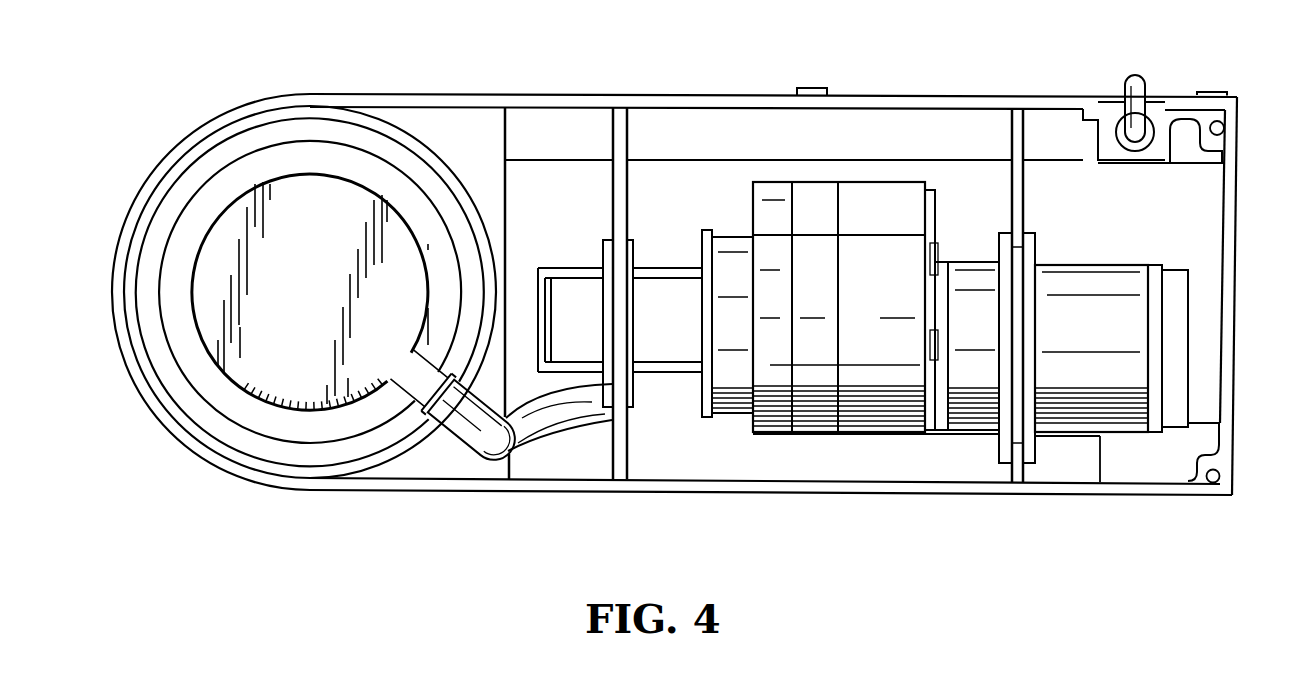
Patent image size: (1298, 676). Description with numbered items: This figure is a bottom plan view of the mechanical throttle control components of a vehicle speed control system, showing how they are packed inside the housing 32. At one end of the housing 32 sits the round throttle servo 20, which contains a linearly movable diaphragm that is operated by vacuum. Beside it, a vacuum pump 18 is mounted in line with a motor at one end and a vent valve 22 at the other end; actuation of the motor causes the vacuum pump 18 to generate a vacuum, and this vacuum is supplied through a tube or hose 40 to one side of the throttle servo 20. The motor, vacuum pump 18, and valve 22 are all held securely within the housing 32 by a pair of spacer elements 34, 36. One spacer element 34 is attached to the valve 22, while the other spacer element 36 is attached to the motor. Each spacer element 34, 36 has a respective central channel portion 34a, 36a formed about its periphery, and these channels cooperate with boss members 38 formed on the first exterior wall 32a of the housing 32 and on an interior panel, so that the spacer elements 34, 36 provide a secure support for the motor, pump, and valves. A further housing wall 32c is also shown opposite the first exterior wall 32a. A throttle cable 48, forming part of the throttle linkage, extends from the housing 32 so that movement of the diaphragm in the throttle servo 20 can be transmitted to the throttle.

The vacuum pump 18 is at (865, 400).
The throttle servo 20 is at (247, 322).
The vent valve 22 is at (672, 345).
The housing 32 is at (1236, 277).
The first exterior wall 32a is at (730, 483).
The housing top wall 32c is at (778, 103).
The spacer element 34 is at (607, 293).
The central channel portion 34a is at (620, 267).
The spacer element 36 is at (1017, 393).
The central channel portion 36a is at (1050, 425).
The boss members 38 is at (618, 143).
The tube or hose 40 is at (472, 438).
The throttle cable 48 is at (1122, 80).